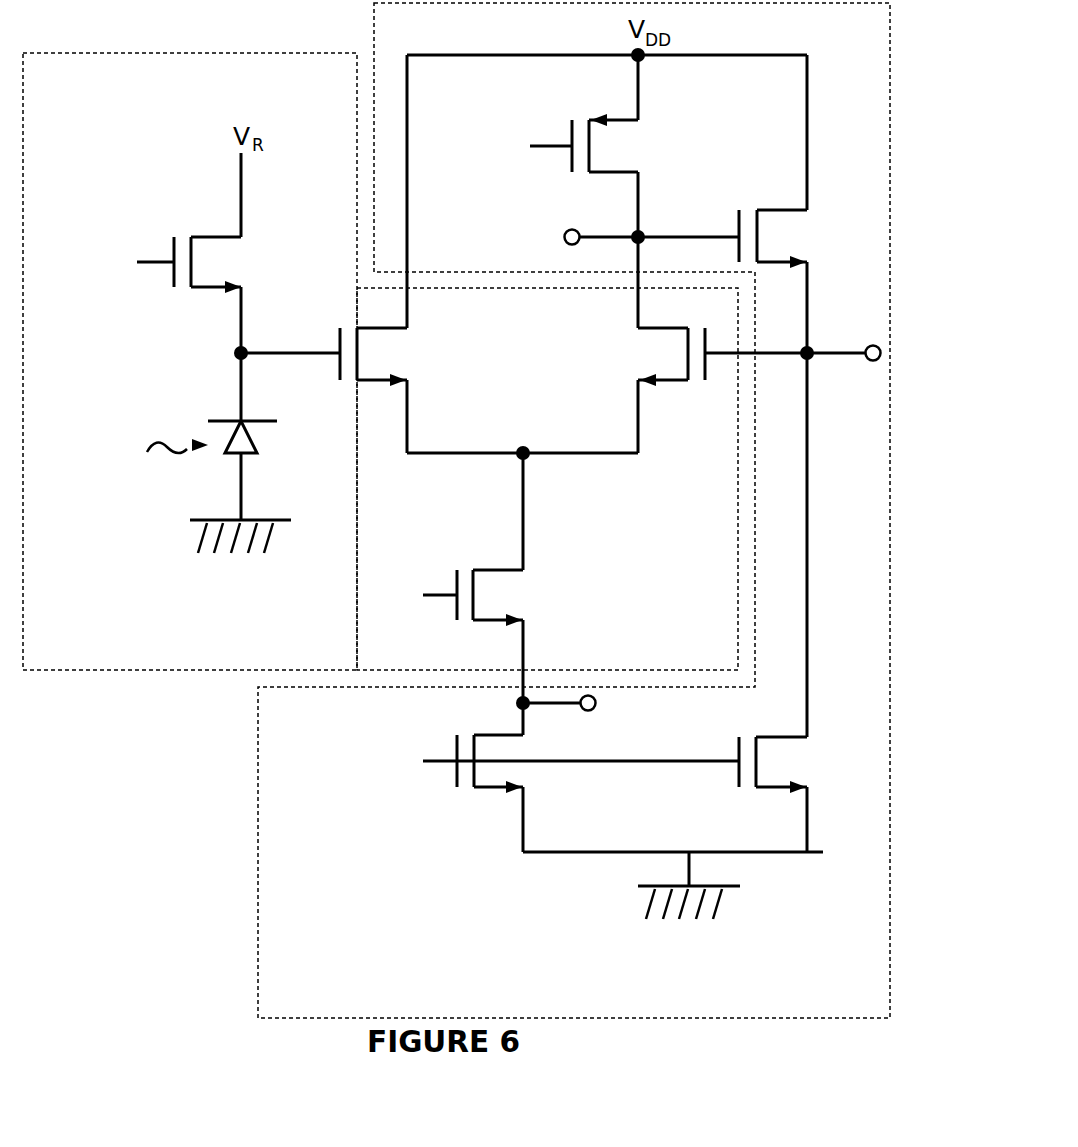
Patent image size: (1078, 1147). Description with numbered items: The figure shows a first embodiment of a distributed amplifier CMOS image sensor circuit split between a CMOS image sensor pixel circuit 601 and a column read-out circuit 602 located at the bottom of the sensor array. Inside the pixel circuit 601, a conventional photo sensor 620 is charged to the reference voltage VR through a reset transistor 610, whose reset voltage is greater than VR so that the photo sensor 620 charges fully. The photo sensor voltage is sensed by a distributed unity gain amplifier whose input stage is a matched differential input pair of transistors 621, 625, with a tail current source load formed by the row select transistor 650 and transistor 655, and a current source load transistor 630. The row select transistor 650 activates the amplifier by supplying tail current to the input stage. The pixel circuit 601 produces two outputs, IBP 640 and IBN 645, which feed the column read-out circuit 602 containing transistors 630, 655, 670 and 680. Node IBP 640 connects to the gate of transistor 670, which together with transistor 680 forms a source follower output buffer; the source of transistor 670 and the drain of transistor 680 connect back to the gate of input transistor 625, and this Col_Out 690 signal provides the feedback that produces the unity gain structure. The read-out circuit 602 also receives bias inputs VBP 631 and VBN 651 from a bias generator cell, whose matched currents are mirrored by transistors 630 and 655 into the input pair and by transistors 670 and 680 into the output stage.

The CMOS image sensor pixel circuit 601 is at (190, 361).
The column read-out circuit 602 is at (574, 510).
The reset transistor 610 is at (173, 265).
The photo sensor 620 is at (235, 462).
The differential input pair transistor 621 is at (394, 390).
The differential input pair transistor 625 is at (650, 345).
The current source load transistor 630 is at (626, 146).
The VBP bias input 631 is at (537, 162).
The IBP node 640 is at (629, 236).
The IBN node 645 is at (598, 707).
The row select transistor 650 is at (455, 649).
The VBN bias input 651 is at (555, 760).
The tail current source transistor 655 is at (473, 793).
The output stage transistor 670 is at (791, 396).
The output stage transistor 680 is at (791, 794).
The Col_Out signal 690 is at (797, 325).